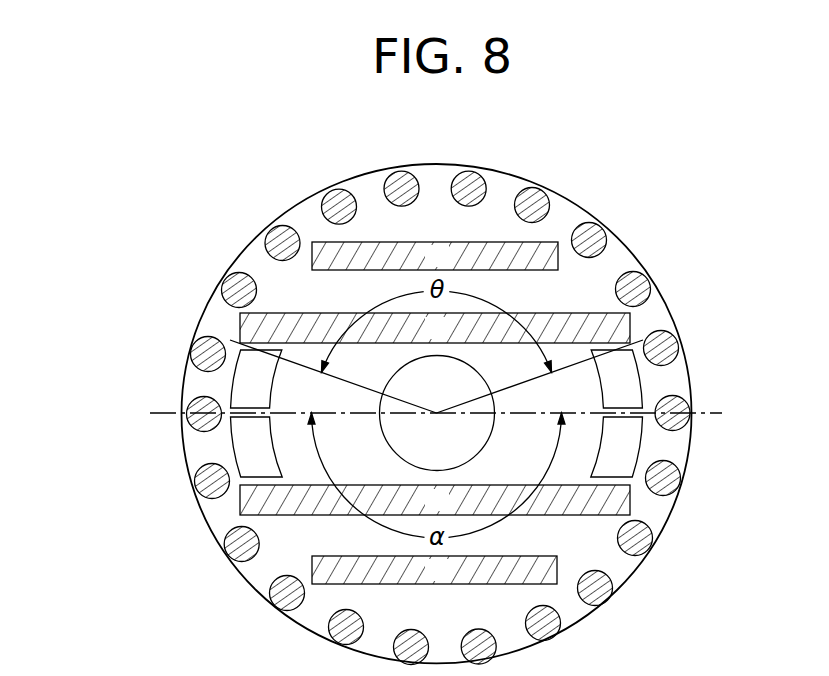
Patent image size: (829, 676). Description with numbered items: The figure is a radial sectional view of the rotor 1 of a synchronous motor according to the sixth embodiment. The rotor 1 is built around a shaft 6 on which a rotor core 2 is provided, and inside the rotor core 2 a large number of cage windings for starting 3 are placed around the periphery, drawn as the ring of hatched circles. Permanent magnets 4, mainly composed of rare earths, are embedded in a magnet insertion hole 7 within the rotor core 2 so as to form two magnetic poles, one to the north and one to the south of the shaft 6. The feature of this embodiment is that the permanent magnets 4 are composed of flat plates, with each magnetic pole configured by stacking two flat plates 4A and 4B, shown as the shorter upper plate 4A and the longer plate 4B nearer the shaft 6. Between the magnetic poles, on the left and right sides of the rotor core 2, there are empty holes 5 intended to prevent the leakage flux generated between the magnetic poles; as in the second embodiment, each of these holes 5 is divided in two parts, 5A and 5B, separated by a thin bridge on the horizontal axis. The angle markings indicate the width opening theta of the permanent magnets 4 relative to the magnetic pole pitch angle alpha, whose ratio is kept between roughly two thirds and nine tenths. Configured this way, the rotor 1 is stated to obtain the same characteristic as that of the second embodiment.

The rotor 1 is at (573, 205).
The rotor core 2 is at (617, 263).
The cage windings for starting 3 is at (668, 330).
The permanent magnets 4 is at (376, 372).
The flat plate 4A is at (327, 252).
The flat plate 4B is at (313, 322).
The empty holes 5 is at (349, 413).
The hole 5A is at (243, 383).
The hole 5B is at (243, 450).
The shaft 6 is at (437, 413).
The magnet insertion hole 7 is at (277, 553).